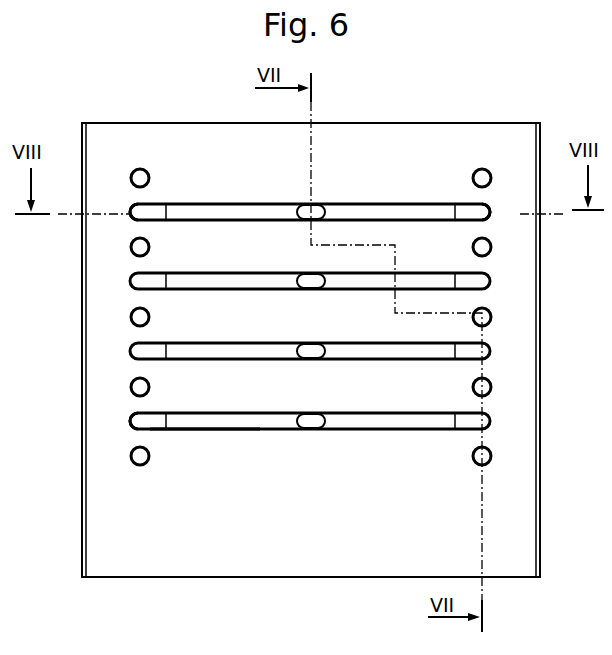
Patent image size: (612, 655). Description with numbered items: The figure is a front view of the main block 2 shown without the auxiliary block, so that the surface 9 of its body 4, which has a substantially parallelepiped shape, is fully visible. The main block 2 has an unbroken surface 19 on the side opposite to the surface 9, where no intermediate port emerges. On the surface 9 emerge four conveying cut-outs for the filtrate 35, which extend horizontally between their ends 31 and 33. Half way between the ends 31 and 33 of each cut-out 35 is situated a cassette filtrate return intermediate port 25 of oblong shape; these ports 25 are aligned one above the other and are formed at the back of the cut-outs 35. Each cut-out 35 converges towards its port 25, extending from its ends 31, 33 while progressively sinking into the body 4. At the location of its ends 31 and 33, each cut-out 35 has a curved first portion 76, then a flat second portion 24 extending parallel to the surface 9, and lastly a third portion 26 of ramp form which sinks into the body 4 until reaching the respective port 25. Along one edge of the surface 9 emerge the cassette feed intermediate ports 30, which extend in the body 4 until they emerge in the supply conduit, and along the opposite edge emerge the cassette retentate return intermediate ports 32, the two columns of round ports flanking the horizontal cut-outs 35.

The main block 2 is at (166, 116).
The body 4 is at (435, 128).
The surface 9 is at (317, 531).
The unbroken surface 19 is at (601, 111).
The flat second portion 24 is at (142, 421).
The cassette filtrate return intermediate port 25 is at (318, 208).
The third portion 26 is at (227, 424).
The cassette feed intermediate port 30 is at (148, 170).
The end 31 is at (134, 220).
The cassette retentate return intermediate port 32 is at (484, 166).
The end 33 is at (490, 221).
The conveying cut-out for the filtrate 35 is at (247, 212).
The curved first portion 76 is at (165, 425).